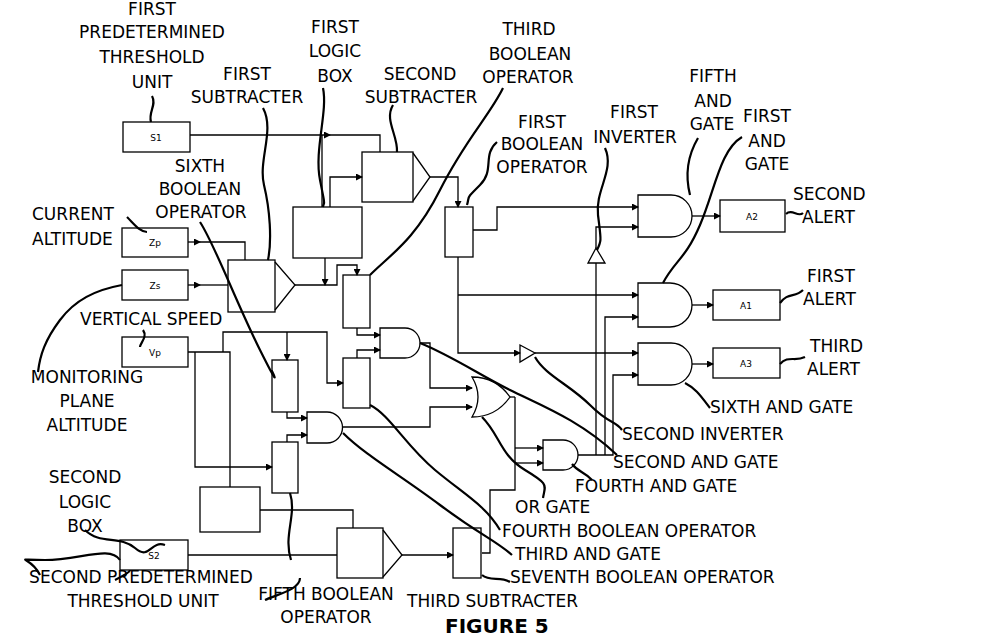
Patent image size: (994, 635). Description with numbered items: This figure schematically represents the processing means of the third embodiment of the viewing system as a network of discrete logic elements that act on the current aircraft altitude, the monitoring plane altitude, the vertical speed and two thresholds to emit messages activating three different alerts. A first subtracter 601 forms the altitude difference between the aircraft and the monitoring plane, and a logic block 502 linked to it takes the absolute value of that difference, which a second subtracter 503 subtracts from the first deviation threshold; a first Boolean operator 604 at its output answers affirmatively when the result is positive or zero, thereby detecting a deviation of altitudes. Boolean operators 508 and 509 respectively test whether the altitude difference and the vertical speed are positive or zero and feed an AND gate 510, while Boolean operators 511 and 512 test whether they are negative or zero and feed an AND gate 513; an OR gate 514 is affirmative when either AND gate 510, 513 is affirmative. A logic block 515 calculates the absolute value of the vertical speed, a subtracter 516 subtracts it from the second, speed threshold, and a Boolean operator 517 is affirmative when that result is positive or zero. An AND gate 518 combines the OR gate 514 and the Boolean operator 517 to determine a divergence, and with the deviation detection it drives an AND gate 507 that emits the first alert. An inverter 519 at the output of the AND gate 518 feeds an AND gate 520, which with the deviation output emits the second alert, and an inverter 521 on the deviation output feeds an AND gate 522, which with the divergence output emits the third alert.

The logic block 502 is at (317, 228).
The second subtracter 503 is at (398, 168).
The first subtracter 601 is at (253, 258).
The first boolean operator 604 is at (465, 222).
The Boolean operator 508 is at (362, 304).
The Boolean operator 509 is at (362, 402).
The AND gate 510 is at (400, 342).
The Boolean operator 511 is at (291, 484).
The Boolean operator 512 is at (278, 372).
The AND gate 513 is at (334, 432).
The OR gate 514 is at (478, 403).
The logic block 515 is at (202, 505).
The subtracter 516 is at (372, 540).
The Boolean operator 517 is at (480, 572).
The AND gate 518 is at (558, 450).
The inverter 519 is at (588, 254).
The AND gate 520 is at (653, 203).
The inverter 521 is at (530, 350).
The AND gate 522 is at (657, 381).
The AND gate 507 is at (660, 294).